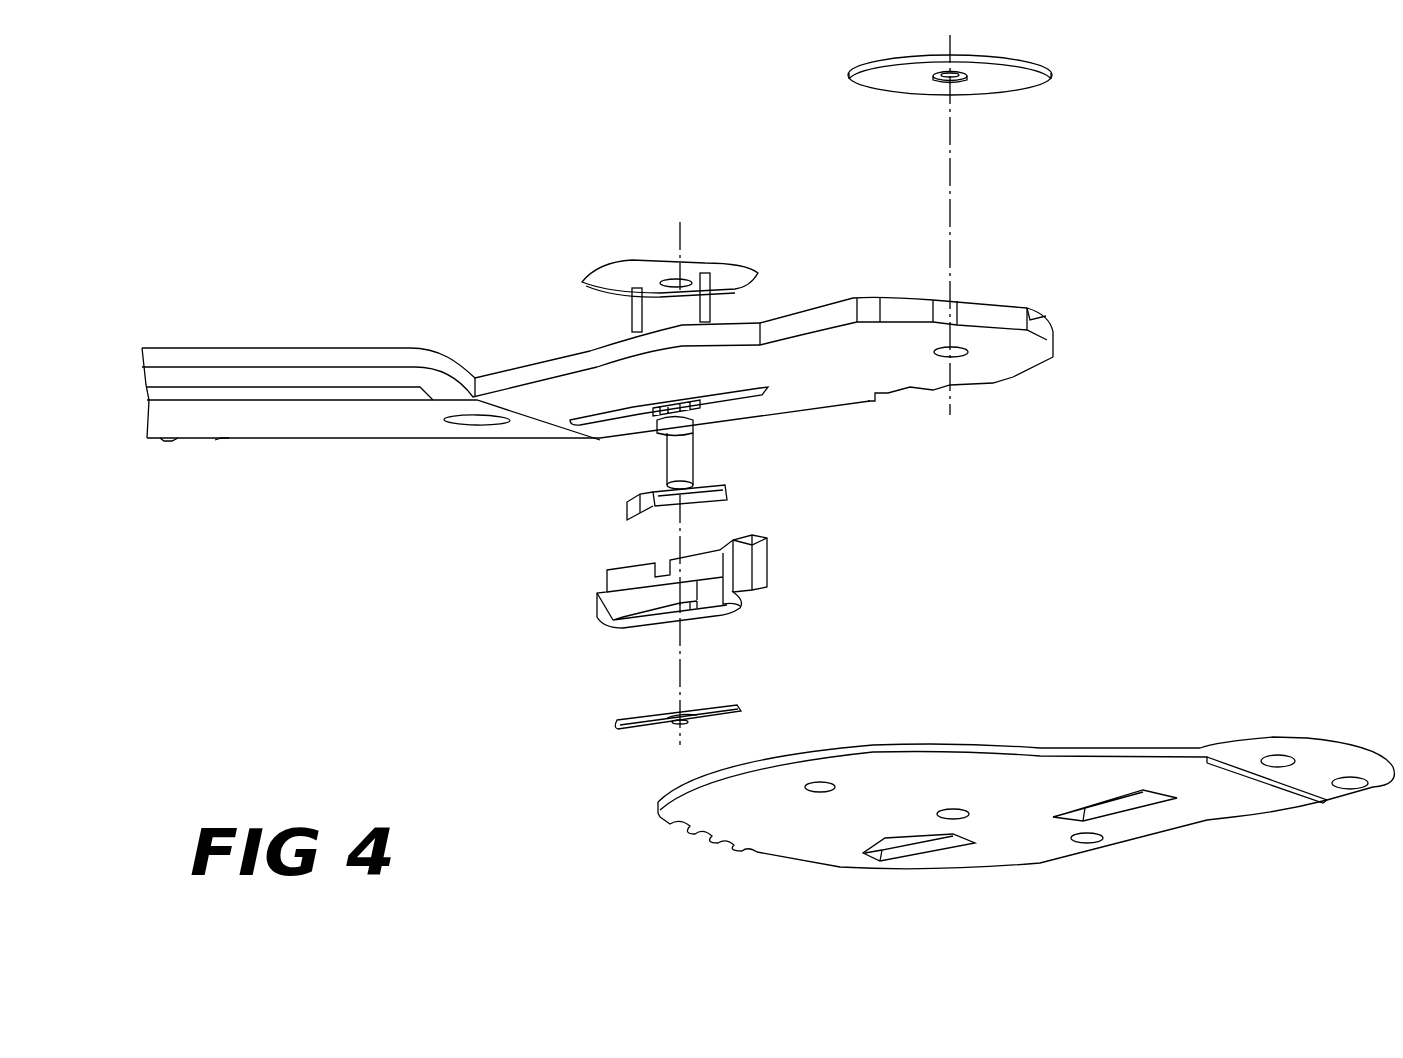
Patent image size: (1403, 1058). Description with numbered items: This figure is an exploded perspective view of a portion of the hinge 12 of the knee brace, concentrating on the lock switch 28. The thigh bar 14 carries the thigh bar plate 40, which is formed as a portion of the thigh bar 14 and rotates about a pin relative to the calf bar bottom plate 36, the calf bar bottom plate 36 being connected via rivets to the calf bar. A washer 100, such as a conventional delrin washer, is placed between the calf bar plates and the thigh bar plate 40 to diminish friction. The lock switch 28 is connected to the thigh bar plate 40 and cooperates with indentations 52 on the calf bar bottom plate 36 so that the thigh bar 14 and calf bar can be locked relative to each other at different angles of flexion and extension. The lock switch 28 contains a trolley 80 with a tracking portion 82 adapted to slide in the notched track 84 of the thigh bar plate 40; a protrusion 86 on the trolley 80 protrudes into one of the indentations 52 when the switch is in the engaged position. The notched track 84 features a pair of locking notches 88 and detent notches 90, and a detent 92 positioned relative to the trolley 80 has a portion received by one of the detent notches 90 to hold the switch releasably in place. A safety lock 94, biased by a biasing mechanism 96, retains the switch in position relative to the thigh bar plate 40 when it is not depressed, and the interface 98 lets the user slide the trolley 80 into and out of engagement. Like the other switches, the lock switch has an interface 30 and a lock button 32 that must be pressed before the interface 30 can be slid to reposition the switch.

The hinge 12 is at (1172, 516).
The thigh bar 14 is at (267, 428).
The lock switch 28 is at (766, 503).
The interface 30 is at (738, 264).
The lock button 32 is at (657, 430).
The calf bar bottom plate 36 is at (994, 772).
The thigh bar plate 40 is at (980, 312).
The indentations 52 is at (673, 830).
The trolley 80 is at (687, 585).
The tracking portion 82 is at (613, 585).
The notched track 84 is at (727, 396).
The protrusion 86 is at (765, 550).
The locking notches 88 is at (693, 398).
The detent notches 90 is at (631, 400).
The detent 92 is at (625, 490).
The safety lock 94 is at (698, 461).
The biasing mechanism 96 is at (647, 714).
The interface 98 is at (692, 262).
The washers 100 is at (1003, 83).